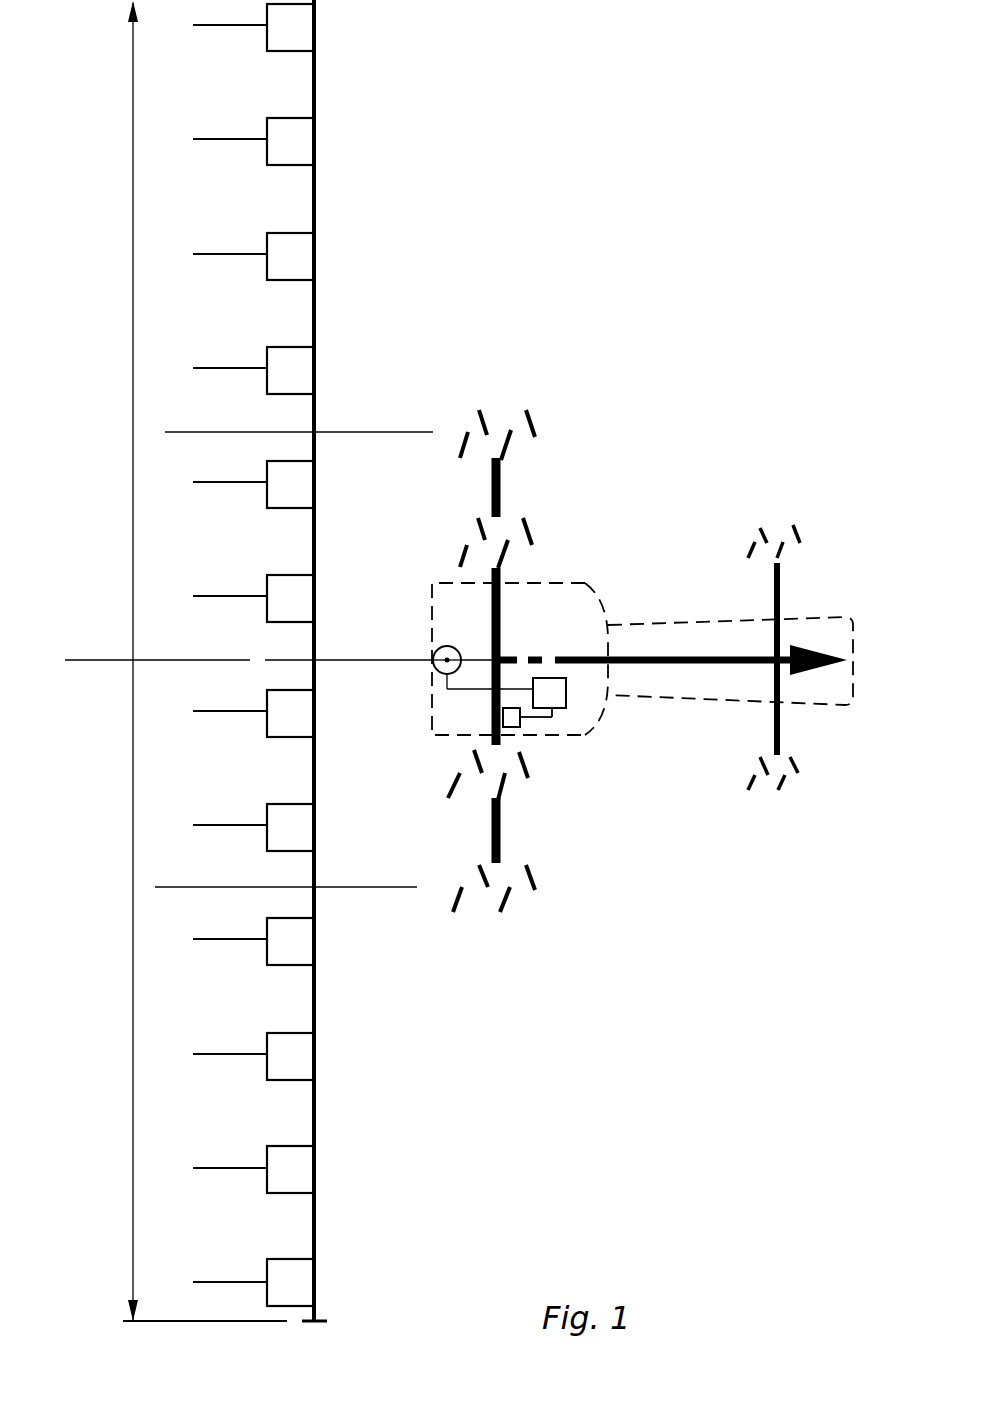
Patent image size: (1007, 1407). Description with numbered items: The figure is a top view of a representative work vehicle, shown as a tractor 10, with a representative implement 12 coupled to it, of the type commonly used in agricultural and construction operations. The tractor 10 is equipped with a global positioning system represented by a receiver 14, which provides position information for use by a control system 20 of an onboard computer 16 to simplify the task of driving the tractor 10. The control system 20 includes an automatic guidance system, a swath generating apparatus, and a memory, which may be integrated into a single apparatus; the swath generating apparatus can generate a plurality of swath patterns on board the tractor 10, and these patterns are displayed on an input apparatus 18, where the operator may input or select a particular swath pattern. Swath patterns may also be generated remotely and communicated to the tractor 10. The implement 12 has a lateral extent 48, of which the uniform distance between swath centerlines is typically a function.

The tractor 10 is at (607, 604).
The implement 12 is at (322, 22).
The receiver 14 is at (436, 648).
The onboard computer 16 is at (617, 720).
The control system 20 is at (556, 695).
The input apparatus 18 is at (517, 725).
The lateral extent 48 is at (132, 558).